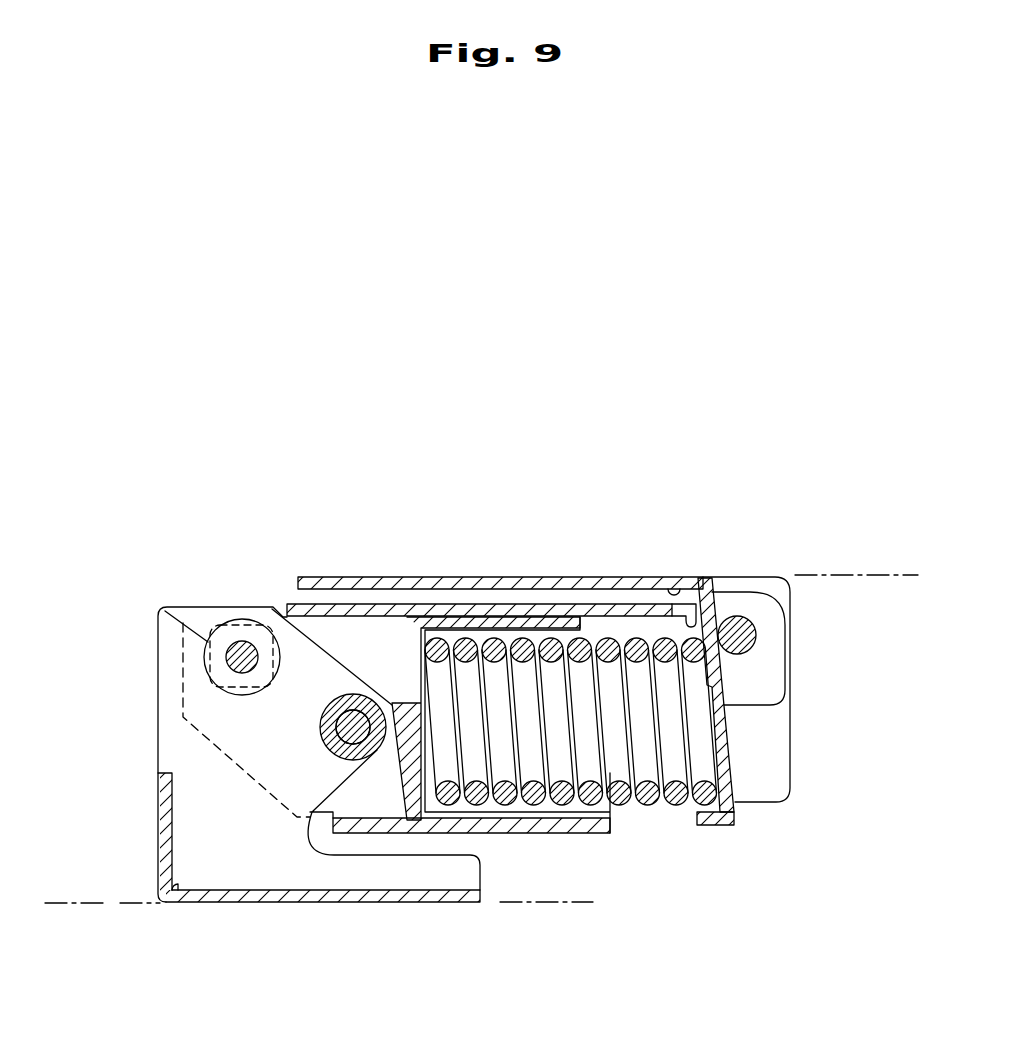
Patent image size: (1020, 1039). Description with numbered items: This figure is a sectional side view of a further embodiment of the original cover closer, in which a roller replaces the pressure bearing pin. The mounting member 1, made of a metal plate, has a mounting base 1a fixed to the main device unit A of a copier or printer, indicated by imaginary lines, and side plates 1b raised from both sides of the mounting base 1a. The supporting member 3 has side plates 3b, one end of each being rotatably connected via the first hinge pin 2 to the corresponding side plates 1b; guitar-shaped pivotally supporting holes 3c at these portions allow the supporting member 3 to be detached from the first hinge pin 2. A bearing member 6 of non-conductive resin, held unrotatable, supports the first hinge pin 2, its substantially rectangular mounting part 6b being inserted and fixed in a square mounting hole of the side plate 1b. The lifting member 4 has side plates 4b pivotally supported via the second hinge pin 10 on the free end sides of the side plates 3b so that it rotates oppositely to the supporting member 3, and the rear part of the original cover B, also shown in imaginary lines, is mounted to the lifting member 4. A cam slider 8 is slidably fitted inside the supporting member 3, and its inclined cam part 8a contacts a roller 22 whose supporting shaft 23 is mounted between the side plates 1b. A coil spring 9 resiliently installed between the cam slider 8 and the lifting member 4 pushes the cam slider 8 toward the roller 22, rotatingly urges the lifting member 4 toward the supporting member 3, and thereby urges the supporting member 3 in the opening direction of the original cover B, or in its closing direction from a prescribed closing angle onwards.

The mounting member 1 is at (150, 777).
The mounting base 1a is at (306, 878).
The side plates 1b is at (165, 722).
The first hinge pin 2 is at (240, 650).
The supporting member 3 is at (479, 598).
The side plates 3b is at (775, 678).
The pivotally supporting holes 3c is at (733, 812).
The lifting member 4 is at (565, 567).
The side plates 4b is at (778, 733).
The bearing member 6 is at (167, 608).
The mounting part 6b is at (223, 637).
The cam slider 8 is at (407, 657).
The inclined cam part 8a is at (404, 798).
The coil spring 9 is at (621, 806).
The second hinge pin 10 is at (743, 632).
The roller 22 is at (327, 725).
The supporting shaft 23 is at (337, 757).
The main device unit A is at (556, 903).
The original cover B is at (870, 572).